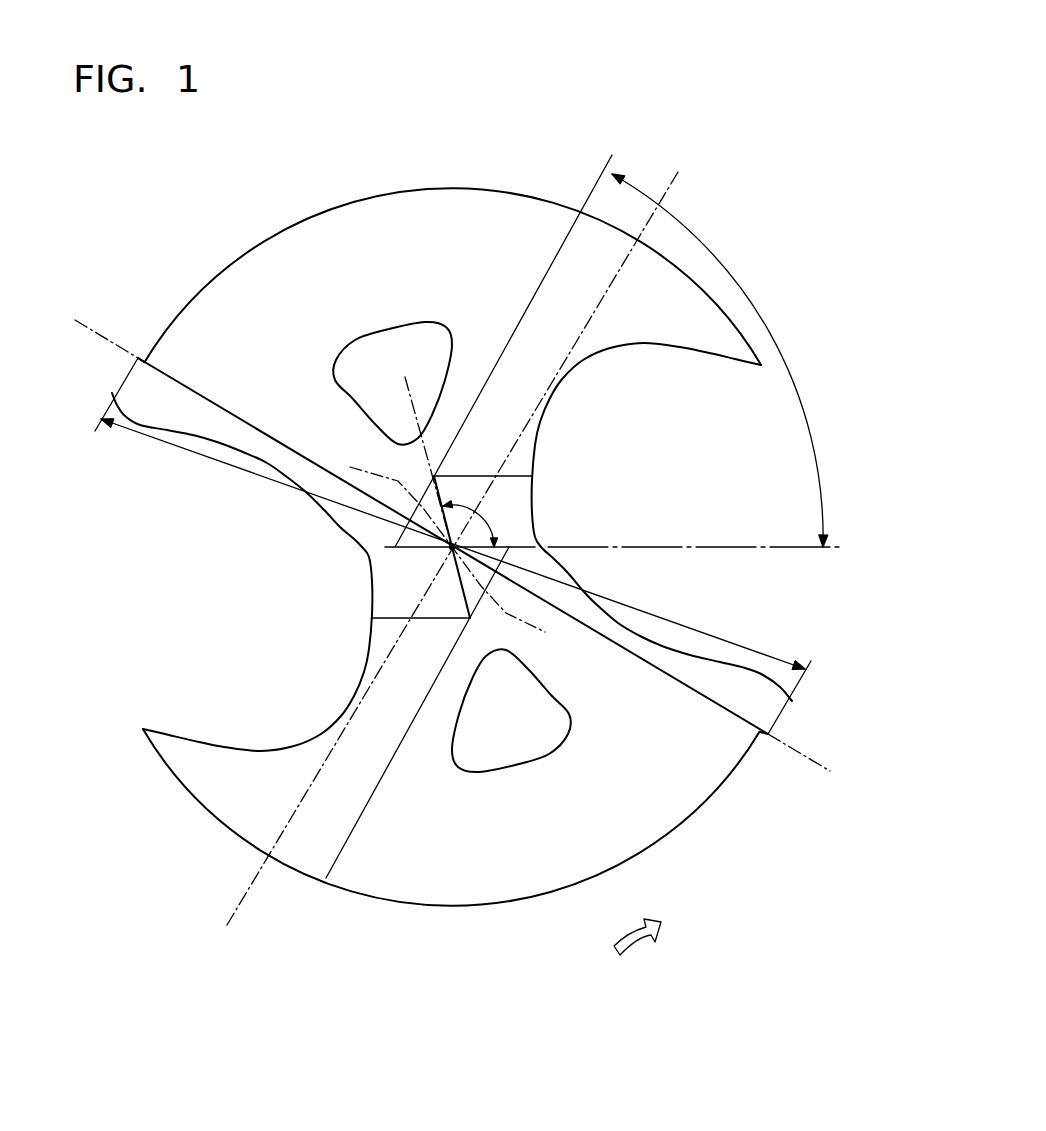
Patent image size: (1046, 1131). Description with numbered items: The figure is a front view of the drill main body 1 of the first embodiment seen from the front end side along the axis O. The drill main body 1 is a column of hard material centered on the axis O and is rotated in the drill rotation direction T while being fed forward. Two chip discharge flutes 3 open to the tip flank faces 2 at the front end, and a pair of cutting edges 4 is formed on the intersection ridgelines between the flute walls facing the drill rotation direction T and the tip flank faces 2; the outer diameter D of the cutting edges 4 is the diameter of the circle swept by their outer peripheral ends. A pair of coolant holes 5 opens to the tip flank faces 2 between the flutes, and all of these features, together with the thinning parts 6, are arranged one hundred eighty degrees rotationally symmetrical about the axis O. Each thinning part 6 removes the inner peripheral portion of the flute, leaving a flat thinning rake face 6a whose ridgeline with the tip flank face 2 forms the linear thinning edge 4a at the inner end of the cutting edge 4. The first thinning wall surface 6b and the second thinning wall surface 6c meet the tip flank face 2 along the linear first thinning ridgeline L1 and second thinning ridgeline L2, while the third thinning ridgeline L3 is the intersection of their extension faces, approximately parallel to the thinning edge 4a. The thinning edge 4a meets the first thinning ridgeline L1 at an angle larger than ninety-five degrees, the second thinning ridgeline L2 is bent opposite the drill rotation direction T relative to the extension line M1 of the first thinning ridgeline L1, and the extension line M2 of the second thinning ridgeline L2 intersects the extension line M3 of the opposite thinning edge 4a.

The drill main body 1 is at (306, 130).
The tip flank face 2 is at (263, 280).
The chip discharge flute 3 is at (152, 572).
The cutting edge 4 is at (245, 452).
The thinning edge 4a is at (357, 547).
The coolant hole 5 is at (405, 360).
The thinning part 6 is at (449, 556).
The thinning rake face 6a is at (512, 528).
The first thinning wall surface 6b is at (478, 488).
The second thinning wall surface 6c is at (520, 395).
The outer diameter of the cutting edge D is at (166, 447).
The first thinning ridgeline L1 is at (420, 495).
The second thinning ridgeline L2 is at (548, 268).
The third thinning ridgeline L3 is at (434, 476).
The extension line of the first thinning ridgeline M1 is at (380, 347).
The extension line of the second thinning ridgeline M2 is at (345, 465).
The extension line of the thinning edge M3 is at (697, 546).
The axis O is at (504, 601).
The drill rotation direction T is at (637, 949).